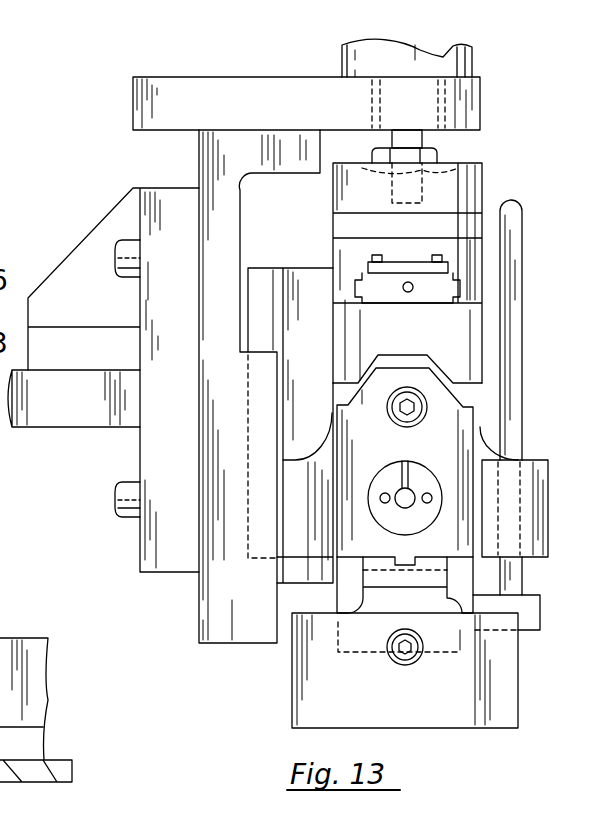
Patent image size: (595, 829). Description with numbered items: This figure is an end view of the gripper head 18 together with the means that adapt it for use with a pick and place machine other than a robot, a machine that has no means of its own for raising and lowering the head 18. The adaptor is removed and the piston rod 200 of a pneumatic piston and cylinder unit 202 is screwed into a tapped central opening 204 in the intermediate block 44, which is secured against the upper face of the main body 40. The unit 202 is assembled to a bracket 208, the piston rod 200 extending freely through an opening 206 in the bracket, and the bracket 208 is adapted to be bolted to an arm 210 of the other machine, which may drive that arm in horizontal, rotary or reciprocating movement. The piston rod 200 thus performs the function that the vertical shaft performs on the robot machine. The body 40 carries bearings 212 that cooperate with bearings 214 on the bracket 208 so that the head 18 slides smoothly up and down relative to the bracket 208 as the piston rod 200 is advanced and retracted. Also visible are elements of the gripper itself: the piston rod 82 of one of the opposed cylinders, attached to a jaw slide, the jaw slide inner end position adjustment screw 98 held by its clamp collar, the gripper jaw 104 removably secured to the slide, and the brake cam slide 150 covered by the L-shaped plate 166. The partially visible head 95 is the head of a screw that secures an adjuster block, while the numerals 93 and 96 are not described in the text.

The head 18 is at (490, 185).
The main body 40 is at (536, 460).
The intermediate block 44 is at (462, 203).
The piston rod 82 is at (412, 400).
The jaw slide inner end position adjustment screw 98 is at (402, 492).
The gripper jaw 104 is at (502, 682).
The brake cam slide 150 is at (456, 301).
The L-shaped plate 166 is at (392, 268).
The piston rod 200 is at (422, 143).
The pneumatic piston and cylinder unit 202 is at (450, 63).
The tapped central opening 204 is at (480, 168).
The opening 206 is at (445, 96).
The bracket 208 is at (230, 147).
The arm 210 is at (62, 410).
The bearings 212 is at (257, 280).
The bearings 214 is at (247, 633).
The head 95 is at (13, 147).
The partial numeral (adjacent figure) 93 is at (13, 192).
The partial numeral (adjacent figure) 96 is at (13, 232).